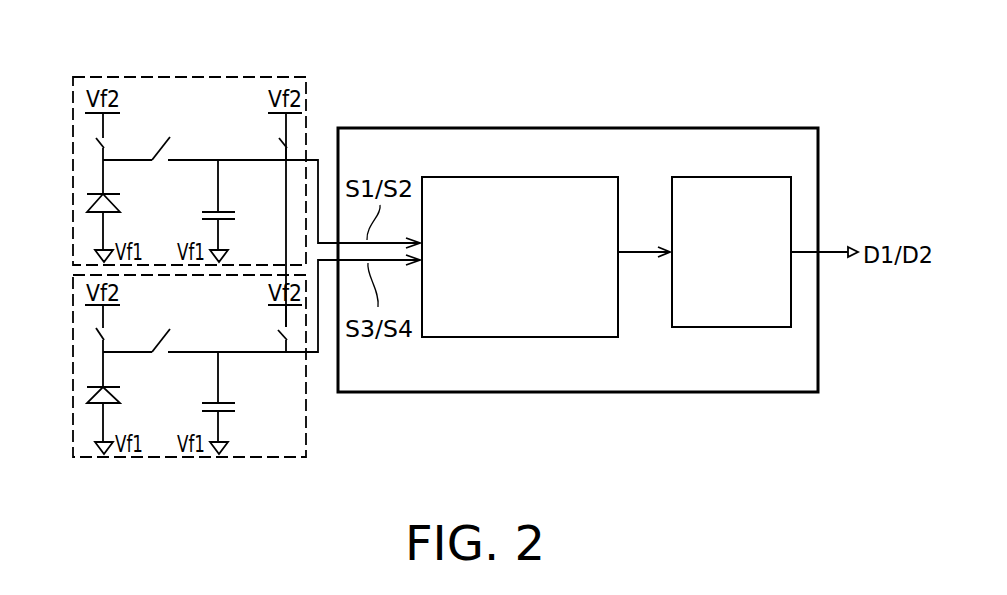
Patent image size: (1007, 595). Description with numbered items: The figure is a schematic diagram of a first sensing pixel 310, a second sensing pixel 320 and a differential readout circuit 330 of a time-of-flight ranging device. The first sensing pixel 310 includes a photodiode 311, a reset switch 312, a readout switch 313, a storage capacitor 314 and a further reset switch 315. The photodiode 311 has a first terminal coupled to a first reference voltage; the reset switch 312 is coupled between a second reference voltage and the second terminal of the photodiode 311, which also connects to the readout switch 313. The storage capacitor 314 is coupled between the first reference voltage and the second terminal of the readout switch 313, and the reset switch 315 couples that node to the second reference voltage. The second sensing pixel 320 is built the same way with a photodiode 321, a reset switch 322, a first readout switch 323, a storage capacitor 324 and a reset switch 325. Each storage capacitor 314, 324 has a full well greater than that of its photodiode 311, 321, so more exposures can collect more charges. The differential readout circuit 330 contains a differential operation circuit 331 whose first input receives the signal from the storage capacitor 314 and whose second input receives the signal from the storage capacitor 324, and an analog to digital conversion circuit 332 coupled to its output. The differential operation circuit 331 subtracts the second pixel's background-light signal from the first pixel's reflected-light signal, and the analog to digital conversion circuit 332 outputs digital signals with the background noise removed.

The first sensing pixel 310 is at (200, 76).
The photodiode 311 is at (87, 200).
The reset switch 312 is at (93, 143).
The readout switch 313 is at (163, 165).
The storage capacitor 314 is at (243, 215).
The reset switch 315 is at (290, 140).
The second sensing pixel 320 is at (192, 458).
The photodiode 321 is at (87, 393).
The reset switch 322 is at (94, 335).
The first readout switch 323 is at (163, 357).
The storage capacitor 324 is at (243, 407).
The reset switch 325 is at (292, 333).
The differential readout circuit 330 is at (768, 125).
The differential operation circuit 331 is at (512, 177).
The analog to digital conversion circuit 332 is at (732, 177).